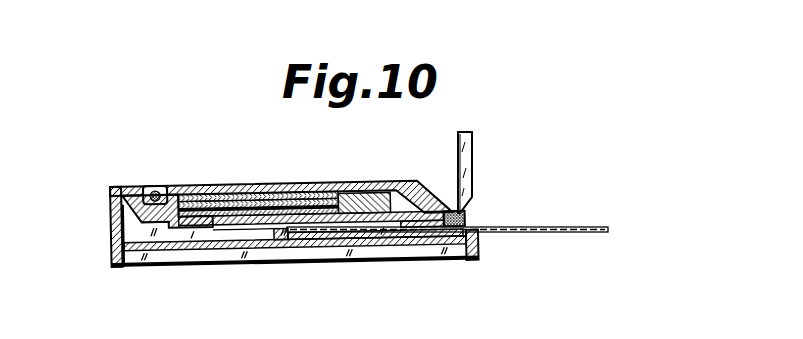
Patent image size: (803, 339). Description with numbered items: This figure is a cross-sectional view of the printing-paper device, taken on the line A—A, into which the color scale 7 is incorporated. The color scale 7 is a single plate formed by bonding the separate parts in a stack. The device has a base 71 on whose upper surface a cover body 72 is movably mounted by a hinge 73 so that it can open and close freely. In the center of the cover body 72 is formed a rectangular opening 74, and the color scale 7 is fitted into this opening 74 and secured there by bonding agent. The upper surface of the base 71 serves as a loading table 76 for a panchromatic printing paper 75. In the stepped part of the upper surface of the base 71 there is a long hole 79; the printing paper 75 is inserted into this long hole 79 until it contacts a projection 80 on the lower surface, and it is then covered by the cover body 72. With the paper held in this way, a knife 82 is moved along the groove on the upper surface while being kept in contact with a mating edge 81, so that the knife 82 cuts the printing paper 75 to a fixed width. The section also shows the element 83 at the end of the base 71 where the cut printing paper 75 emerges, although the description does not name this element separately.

The color scale 7 is at (230, 186).
The base 71 is at (110, 218).
The cover body 72 is at (388, 159).
The hinge 73 is at (149, 190).
The rectangular opening 74 is at (173, 226).
The panchromatic printing paper 75 is at (290, 196).
The loading table 76 is at (360, 230).
The long hole 79 is at (396, 226).
The projection 80 is at (282, 243).
The mating edge 81 is at (450, 213).
The knife 82 is at (472, 152).
The end wall 83 is at (479, 247).